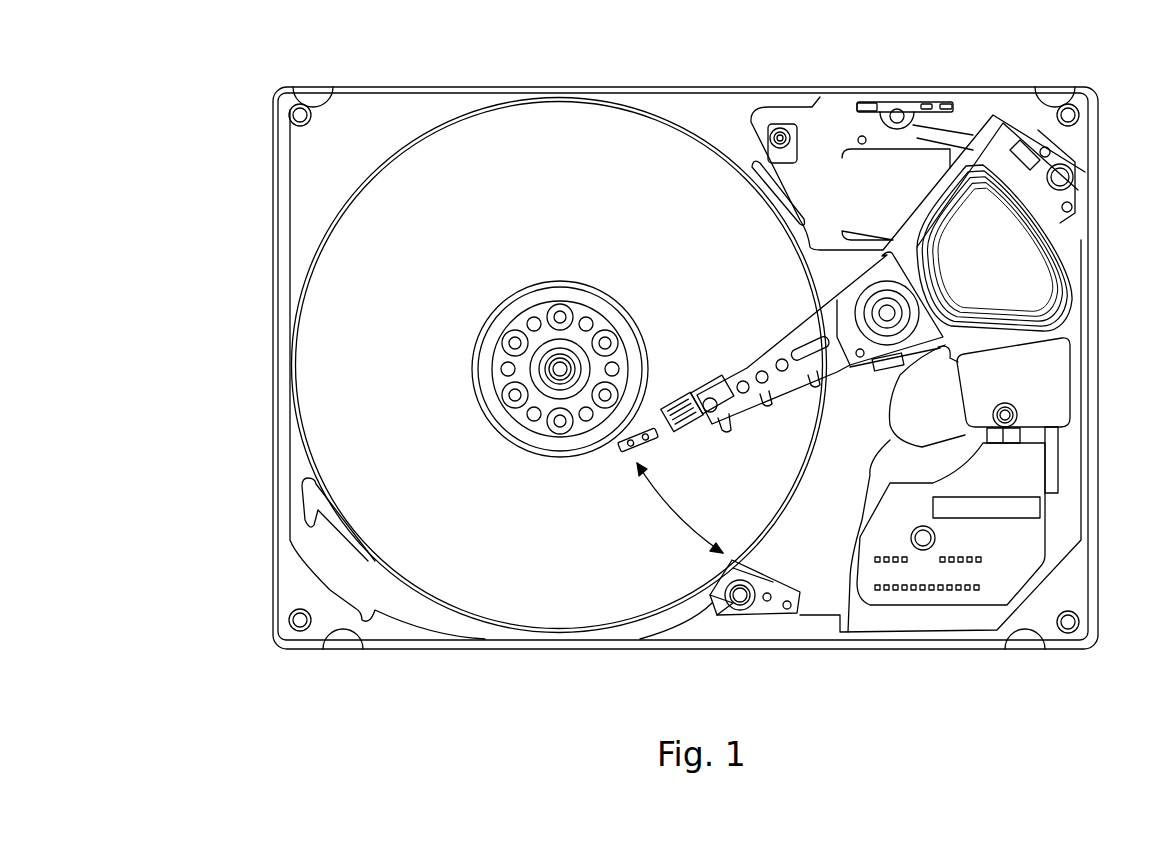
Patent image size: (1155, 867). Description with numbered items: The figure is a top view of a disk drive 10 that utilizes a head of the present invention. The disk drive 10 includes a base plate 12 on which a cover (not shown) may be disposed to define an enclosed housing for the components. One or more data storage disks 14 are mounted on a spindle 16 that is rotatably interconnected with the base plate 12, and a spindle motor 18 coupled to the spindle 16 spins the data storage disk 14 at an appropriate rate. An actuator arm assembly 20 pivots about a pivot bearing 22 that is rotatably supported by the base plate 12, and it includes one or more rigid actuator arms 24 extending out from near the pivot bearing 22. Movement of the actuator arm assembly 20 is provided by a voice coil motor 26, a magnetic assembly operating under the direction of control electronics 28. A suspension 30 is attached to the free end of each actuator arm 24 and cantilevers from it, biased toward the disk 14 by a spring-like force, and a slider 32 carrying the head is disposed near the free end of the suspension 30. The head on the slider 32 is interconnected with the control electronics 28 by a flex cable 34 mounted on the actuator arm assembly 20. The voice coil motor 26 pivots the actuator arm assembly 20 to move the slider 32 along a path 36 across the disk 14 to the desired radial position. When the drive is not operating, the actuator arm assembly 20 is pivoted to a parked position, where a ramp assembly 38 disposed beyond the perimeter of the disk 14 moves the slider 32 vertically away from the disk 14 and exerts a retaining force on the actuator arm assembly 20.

The disk drive 10 is at (250, 156).
The base plate 12 is at (683, 368).
The data storage disk 14 is at (567, 130).
The spindle 16 is at (571, 283).
The spindle motor 18 is at (548, 360).
The actuator arm assembly 20 is at (793, 326).
The pivot bearing 22 is at (882, 330).
The actuator arm 24 is at (757, 400).
The voice coil motor 26 is at (1010, 271).
The control electronics 28 is at (922, 598).
The suspension 30 is at (672, 432).
The slider 32 is at (625, 450).
The flex cable 34 is at (870, 512).
The path 36 is at (675, 518).
The ramp assembly 38 is at (760, 600).